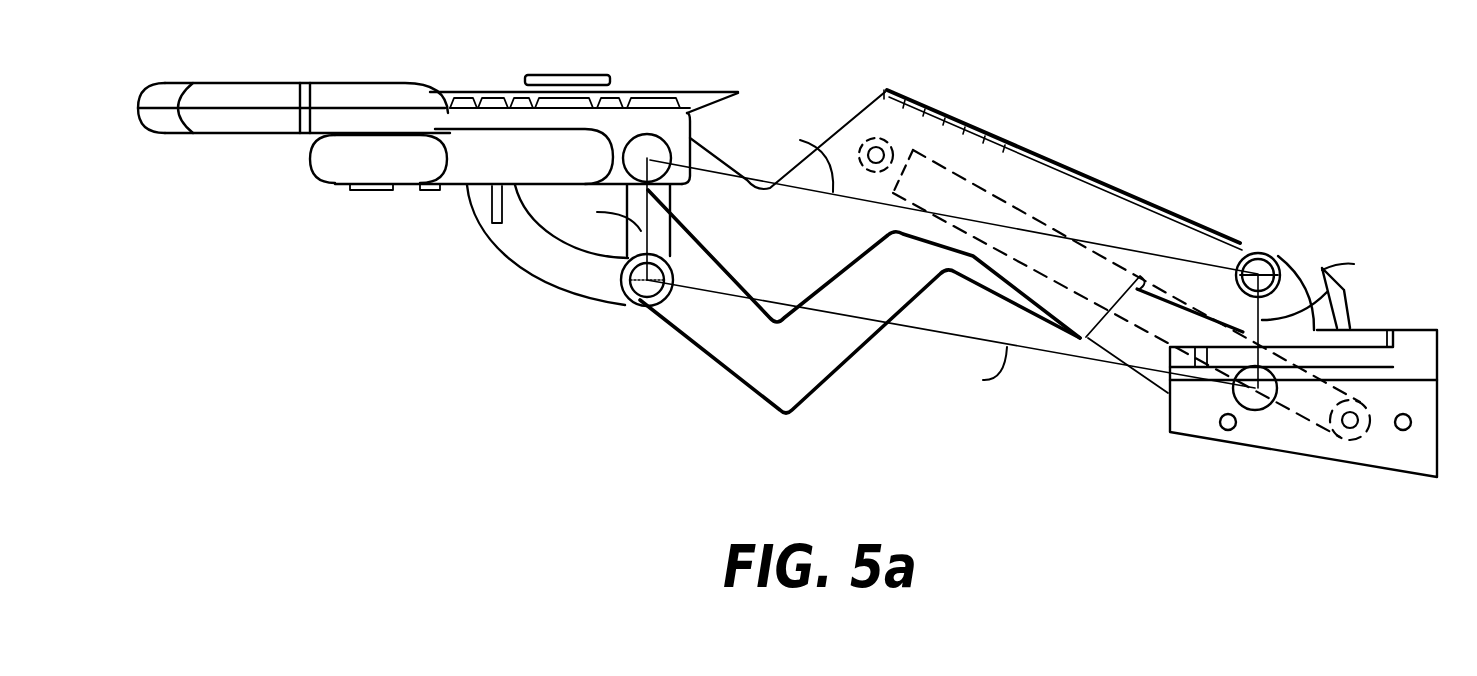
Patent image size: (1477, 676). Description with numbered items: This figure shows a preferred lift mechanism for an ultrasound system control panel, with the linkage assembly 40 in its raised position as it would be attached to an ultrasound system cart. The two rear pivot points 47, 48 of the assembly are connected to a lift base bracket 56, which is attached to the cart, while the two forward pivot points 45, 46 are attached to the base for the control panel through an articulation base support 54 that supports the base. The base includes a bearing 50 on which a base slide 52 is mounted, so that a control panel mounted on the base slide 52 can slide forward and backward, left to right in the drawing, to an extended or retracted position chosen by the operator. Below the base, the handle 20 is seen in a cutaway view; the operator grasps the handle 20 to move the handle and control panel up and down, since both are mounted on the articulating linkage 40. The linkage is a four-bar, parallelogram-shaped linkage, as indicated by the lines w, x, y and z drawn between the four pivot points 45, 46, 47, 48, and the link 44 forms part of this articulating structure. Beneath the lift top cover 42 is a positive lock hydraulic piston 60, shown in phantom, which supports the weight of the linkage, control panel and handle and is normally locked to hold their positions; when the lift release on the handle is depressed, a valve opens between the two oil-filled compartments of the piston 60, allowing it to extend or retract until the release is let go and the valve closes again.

The handle 20 is at (335, 172).
The linkage assembly 40 is at (832, 68).
The lift top cover 42 is at (1158, 227).
The link arm 44 is at (850, 357).
The pivot point 45 is at (650, 150).
The pivot point 46 is at (643, 287).
The rear pivot point 47 is at (1262, 267).
The rear pivot point 48 is at (1254, 398).
The bearing 50 is at (488, 100).
The base slide 52 is at (702, 100).
The articulation base support 54 is at (543, 263).
The lift base bracket 56 is at (1381, 463).
The hydraulic piston 60 is at (1080, 238).